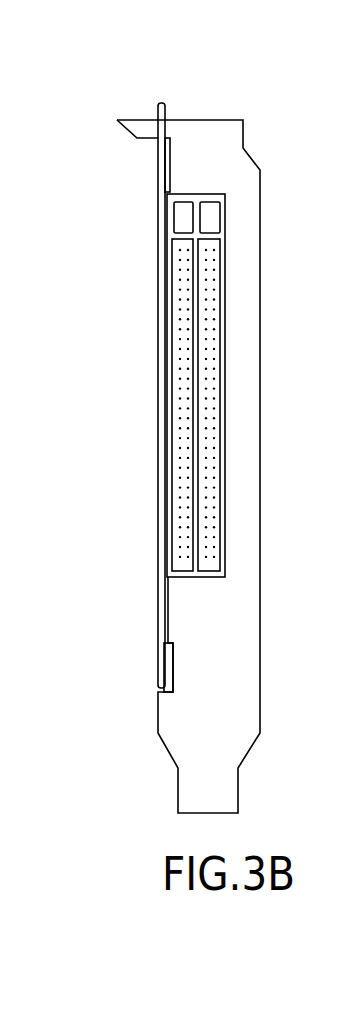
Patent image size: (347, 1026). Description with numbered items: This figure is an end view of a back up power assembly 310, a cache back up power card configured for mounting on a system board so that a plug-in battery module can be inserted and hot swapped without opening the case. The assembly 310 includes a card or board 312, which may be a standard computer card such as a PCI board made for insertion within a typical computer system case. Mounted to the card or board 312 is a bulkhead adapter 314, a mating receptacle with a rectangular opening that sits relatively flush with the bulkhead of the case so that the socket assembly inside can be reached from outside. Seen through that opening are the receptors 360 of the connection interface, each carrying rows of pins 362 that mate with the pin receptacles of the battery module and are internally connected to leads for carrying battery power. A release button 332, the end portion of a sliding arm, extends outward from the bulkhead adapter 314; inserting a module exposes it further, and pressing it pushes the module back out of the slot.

The back up power assembly 310 is at (218, 420).
The card or board 312 is at (162, 657).
The bulkhead adapter 314 is at (158, 733).
The release button 332 is at (216, 214).
The receptor 360 is at (251, 420).
The pins 362 is at (213, 548).